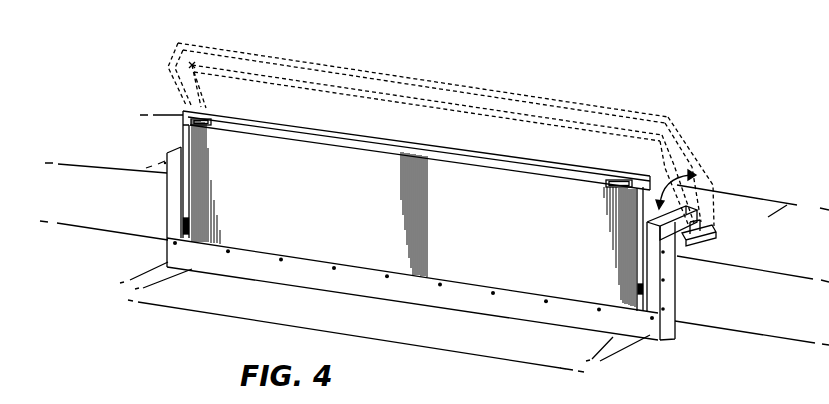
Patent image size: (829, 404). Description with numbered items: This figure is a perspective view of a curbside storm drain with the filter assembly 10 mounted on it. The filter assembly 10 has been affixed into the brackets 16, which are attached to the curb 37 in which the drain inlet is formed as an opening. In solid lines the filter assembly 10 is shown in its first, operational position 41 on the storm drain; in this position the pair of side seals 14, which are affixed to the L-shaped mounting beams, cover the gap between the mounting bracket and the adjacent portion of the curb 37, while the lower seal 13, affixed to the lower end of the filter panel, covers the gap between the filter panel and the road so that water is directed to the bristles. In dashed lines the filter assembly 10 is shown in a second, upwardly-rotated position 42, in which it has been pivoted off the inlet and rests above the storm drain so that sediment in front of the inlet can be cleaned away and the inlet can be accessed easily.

The filter assembly 10 is at (173, 105).
The lower seal 13 is at (647, 335).
The side seals 14 is at (665, 330).
The brackets 16 is at (700, 223).
The curb 37 is at (78, 178).
The operational position 41 is at (137, 240).
The upwardly-rotated position 42 is at (301, 62).